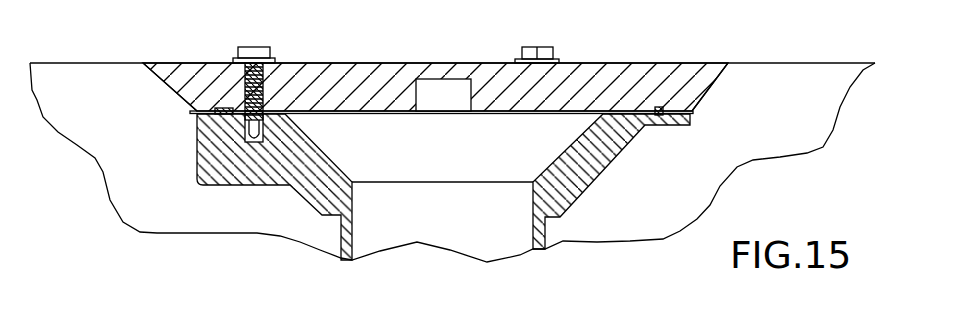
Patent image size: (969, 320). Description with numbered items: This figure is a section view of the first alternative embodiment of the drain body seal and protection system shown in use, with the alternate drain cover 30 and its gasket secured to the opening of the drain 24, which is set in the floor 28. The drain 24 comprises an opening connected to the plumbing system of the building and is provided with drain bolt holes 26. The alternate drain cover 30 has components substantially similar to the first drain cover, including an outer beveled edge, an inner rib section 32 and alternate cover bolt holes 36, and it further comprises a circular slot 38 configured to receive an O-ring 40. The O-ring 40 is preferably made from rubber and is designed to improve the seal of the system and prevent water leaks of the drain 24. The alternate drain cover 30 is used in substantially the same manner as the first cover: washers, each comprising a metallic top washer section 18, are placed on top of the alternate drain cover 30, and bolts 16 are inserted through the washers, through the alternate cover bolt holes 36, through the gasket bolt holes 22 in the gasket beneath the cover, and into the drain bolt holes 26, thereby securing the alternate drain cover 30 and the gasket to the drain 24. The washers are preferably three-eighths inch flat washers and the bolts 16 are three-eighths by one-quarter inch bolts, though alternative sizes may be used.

The bolt 16 is at (255, 48).
The metallic top washer section 18 is at (240, 62).
The gasket bolt hole 22 is at (197, 168).
The drain 24 is at (617, 158).
The drain bolt hole 26 is at (197, 172).
The floor 28 is at (720, 165).
The alternate drain cover 30 is at (594, 66).
The inner rib section 32 is at (541, 113).
The alternate cover bolt hole 36 is at (268, 88).
The circular slot 38 is at (226, 108).
The O-ring 40 is at (196, 108).